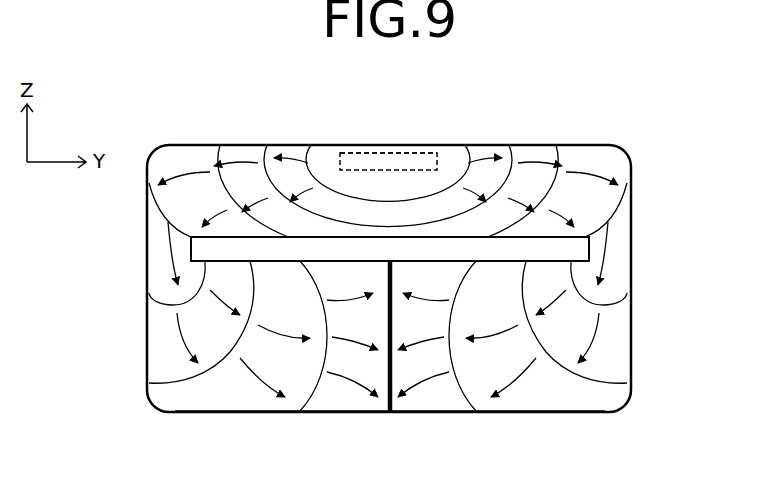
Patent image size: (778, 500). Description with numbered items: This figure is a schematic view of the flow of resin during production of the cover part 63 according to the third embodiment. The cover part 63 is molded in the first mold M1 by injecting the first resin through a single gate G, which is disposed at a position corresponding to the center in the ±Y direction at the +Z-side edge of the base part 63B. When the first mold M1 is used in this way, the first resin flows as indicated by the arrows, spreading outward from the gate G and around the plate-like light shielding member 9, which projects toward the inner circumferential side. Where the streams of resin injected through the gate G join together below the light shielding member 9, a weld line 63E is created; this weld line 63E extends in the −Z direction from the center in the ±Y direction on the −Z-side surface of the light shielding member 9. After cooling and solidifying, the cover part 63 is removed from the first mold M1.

The cover part 63 is at (620, 144).
The base part 63B is at (559, 412).
The weld line 63E is at (393, 367).
The light shielding member 9 is at (578, 245).
The first mold M1 is at (524, 148).
The gate G is at (340, 154).